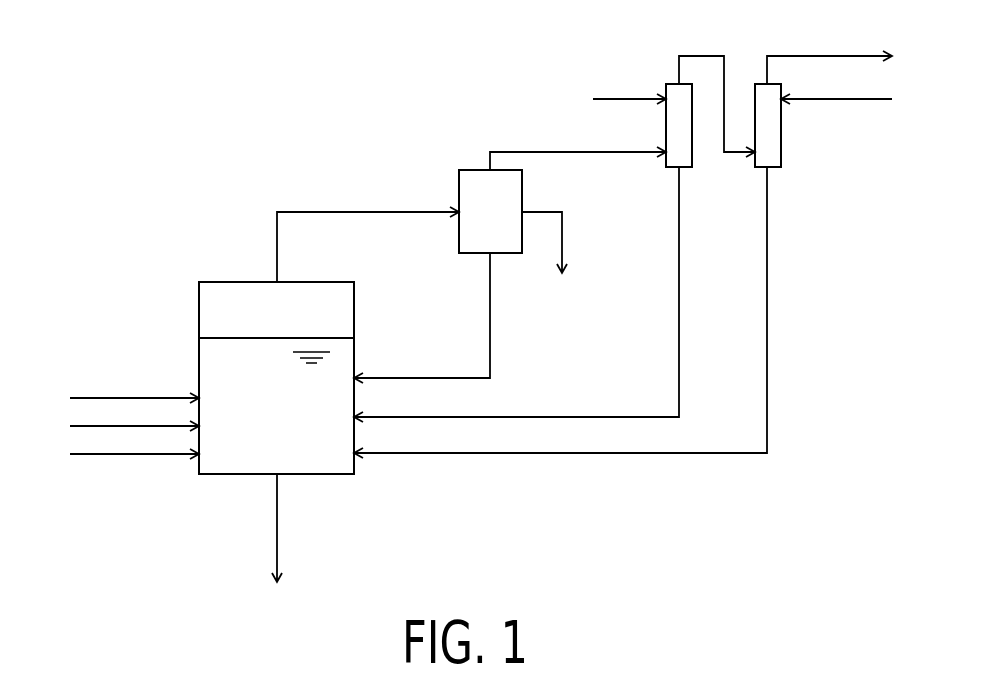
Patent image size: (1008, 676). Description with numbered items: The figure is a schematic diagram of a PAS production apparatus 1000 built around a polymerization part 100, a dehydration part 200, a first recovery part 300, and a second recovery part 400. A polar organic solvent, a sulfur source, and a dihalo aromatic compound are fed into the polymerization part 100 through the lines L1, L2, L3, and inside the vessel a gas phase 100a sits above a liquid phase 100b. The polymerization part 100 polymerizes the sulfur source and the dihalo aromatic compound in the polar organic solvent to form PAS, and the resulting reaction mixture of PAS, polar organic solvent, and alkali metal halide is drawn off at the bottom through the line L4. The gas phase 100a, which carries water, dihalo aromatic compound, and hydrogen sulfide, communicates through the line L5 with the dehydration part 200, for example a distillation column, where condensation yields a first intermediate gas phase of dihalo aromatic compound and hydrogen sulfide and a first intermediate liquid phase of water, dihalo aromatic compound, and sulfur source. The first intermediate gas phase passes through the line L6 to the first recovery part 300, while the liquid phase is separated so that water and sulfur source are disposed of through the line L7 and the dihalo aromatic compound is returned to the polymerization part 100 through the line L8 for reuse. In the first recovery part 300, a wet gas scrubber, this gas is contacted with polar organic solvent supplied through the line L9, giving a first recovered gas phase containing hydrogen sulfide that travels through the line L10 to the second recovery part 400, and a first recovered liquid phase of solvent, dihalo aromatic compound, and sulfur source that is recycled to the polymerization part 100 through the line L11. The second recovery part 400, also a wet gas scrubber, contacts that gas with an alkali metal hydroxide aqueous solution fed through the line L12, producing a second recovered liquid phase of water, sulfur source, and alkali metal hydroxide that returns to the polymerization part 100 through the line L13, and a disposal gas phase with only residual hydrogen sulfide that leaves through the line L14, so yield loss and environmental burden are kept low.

The PAS production apparatus 1000 is at (184, 122).
The polymerization part 100 is at (221, 281).
The gas phase 100a is at (199, 311).
The liquid phase 100b is at (199, 360).
The dehydration part 200 is at (462, 170).
The first recovery part 300 is at (659, 168).
The second recovery part 400 is at (782, 155).
The line L1 is at (70, 398).
The line L2 is at (70, 426).
The line L3 is at (70, 454).
The line L4 is at (279, 524).
The line L5 is at (339, 212).
The line L6 is at (543, 152).
The line L7 is at (564, 237).
The line L8 is at (492, 323).
The line L9 is at (612, 99).
The line L10 is at (702, 56).
The line L11 is at (681, 322).
The line L12 is at (857, 102).
The line L13 is at (769, 322).
The line L14 is at (818, 56).